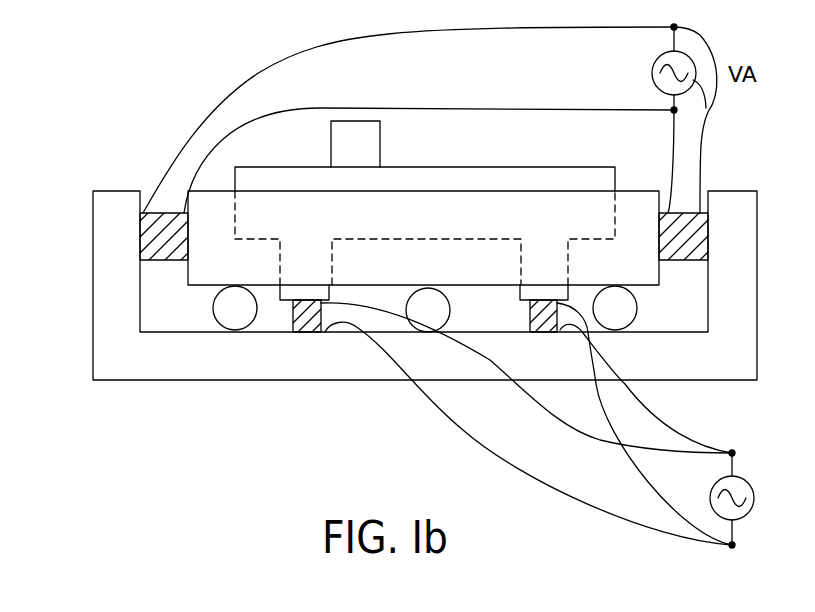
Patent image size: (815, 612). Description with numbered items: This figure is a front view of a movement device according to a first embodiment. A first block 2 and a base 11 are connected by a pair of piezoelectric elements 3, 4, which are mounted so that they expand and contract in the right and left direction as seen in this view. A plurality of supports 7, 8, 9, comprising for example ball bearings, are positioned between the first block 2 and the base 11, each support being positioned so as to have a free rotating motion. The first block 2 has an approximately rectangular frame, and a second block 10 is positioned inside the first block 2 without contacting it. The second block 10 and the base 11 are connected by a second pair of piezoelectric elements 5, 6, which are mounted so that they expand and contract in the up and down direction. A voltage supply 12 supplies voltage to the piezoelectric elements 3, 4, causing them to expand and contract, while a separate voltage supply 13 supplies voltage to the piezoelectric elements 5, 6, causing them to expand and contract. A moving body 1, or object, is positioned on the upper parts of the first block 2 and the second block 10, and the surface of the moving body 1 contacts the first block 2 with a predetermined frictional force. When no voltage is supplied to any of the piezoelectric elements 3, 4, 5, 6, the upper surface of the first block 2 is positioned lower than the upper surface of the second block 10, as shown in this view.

The moving body 1 is at (377, 151).
The first block 2 is at (636, 192).
The piezoelectric element 3 is at (157, 262).
The piezoelectric element 4 is at (668, 263).
The piezoelectric element 5 is at (291, 322).
The piezoelectric element 6 is at (529, 312).
The support 7 is at (220, 322).
The support 8 is at (435, 322).
The support 9 is at (612, 325).
The second block 10 is at (533, 176).
The base 11 is at (750, 308).
The voltage supply 12 is at (706, 105).
The voltage supply 13 is at (742, 518).